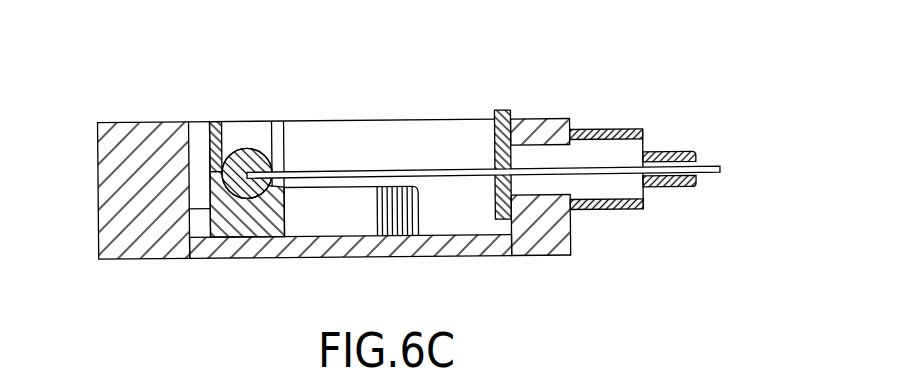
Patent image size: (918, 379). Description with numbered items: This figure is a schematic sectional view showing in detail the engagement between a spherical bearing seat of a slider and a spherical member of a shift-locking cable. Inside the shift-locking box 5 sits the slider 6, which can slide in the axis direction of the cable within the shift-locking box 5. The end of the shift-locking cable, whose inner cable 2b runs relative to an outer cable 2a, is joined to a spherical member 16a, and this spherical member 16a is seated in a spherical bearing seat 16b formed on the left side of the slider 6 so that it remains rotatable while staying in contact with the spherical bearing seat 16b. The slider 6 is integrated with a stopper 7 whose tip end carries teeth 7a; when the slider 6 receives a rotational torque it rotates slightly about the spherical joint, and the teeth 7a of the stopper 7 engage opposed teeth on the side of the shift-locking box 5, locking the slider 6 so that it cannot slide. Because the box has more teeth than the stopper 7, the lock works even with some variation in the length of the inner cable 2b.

The tube 2a is at (680, 189).
The inner cable 2b is at (718, 170).
The shift-locking box 5 is at (541, 238).
The slider 6 is at (214, 130).
The stopper 7 is at (320, 212).
The teeth 7a is at (412, 217).
The spherical member 16a is at (248, 152).
The spherical bearing seat 16b is at (240, 201).